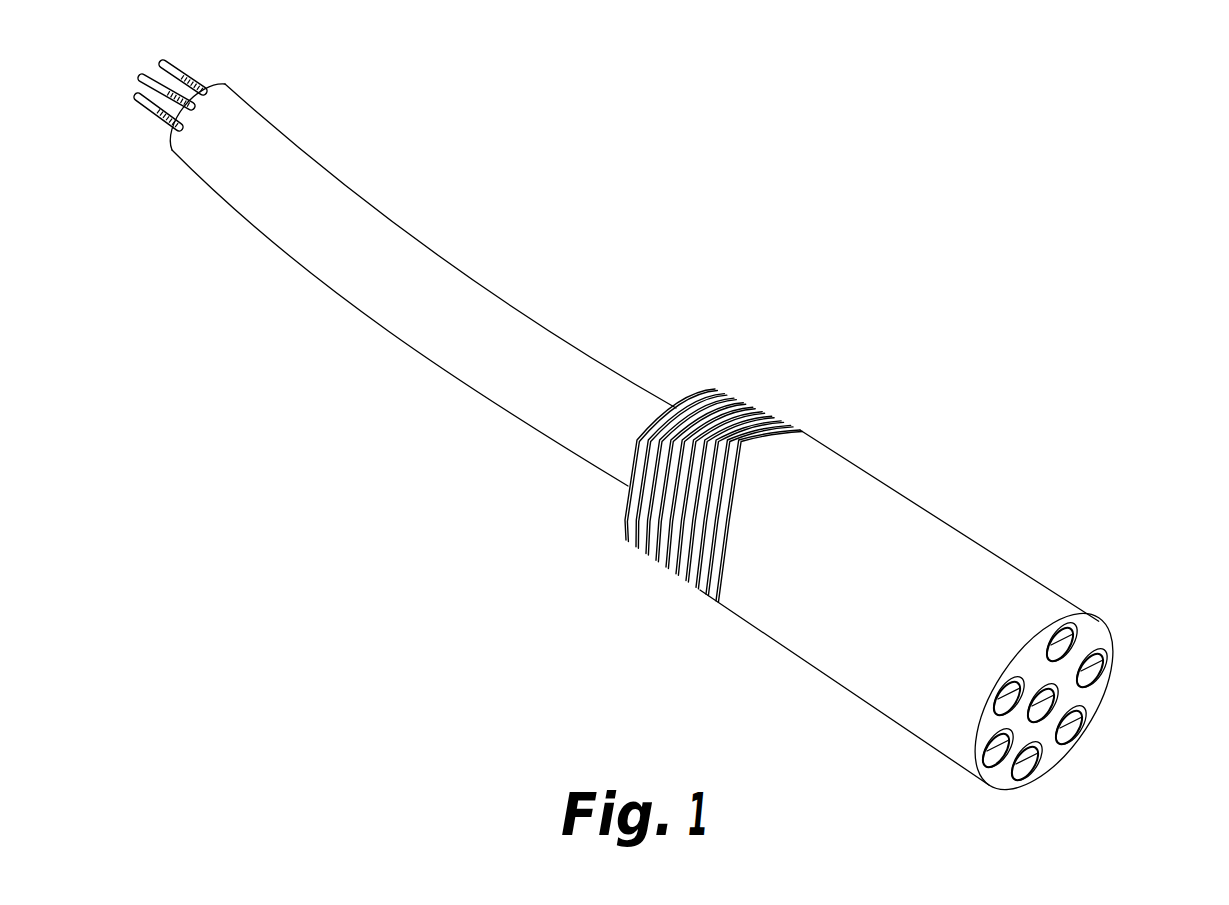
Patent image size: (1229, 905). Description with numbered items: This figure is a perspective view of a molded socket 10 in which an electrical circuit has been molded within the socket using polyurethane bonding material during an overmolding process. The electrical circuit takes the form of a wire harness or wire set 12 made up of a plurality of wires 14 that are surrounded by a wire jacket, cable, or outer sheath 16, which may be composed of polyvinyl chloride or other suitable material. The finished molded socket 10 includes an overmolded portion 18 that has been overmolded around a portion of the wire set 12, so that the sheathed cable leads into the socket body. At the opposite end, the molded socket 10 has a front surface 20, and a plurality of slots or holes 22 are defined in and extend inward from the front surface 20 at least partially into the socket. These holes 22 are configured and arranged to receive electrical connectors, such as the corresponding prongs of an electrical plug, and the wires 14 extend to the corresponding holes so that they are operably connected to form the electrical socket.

The molded socket 10 is at (967, 198).
The wire set 12 is at (644, 265).
The wires 14 is at (170, 63).
The outer sheath 16 is at (427, 246).
The overmolded portion 18 is at (903, 517).
The front surface 20 is at (1087, 632).
The holes 22 is at (1103, 678).